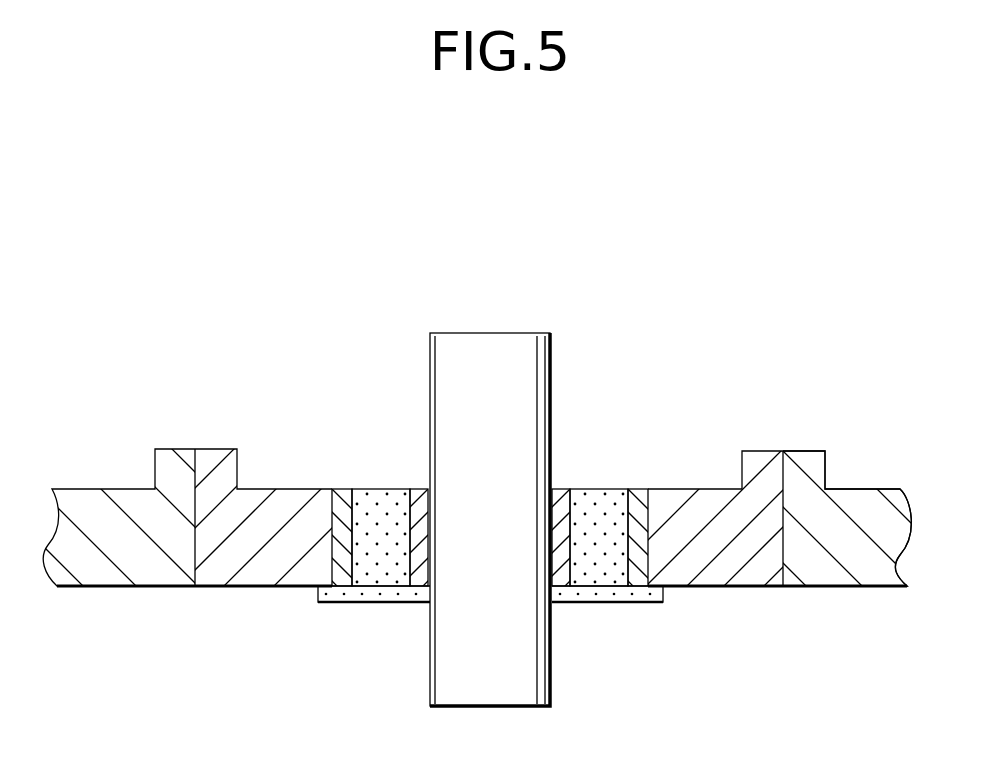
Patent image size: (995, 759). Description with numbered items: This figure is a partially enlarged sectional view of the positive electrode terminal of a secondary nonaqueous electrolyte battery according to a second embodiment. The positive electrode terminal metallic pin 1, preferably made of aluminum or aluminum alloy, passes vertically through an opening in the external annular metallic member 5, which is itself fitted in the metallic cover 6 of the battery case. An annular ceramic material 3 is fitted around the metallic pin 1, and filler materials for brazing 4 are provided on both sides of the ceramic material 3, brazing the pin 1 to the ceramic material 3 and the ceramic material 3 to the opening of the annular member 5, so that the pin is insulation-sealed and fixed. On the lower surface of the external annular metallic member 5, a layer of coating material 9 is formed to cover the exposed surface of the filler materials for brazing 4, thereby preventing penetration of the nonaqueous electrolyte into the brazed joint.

The positive electrode terminal metallic pin 1 is at (483, 350).
The ceramic material 3 is at (383, 493).
The filler material for brazing 4 is at (337, 493).
The external annular metallic member 5 is at (280, 493).
The metallic cover 6 is at (853, 500).
The coating material 9 is at (373, 592).